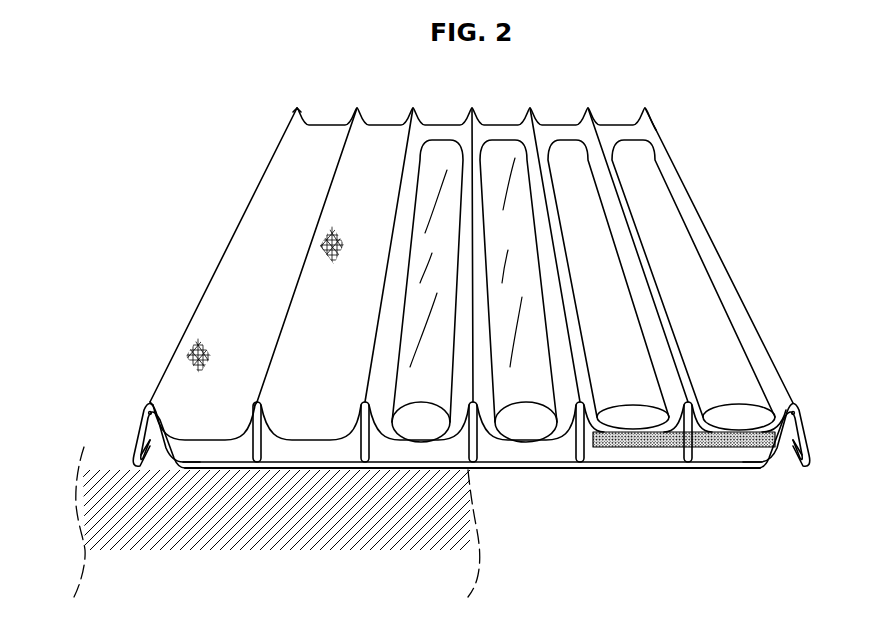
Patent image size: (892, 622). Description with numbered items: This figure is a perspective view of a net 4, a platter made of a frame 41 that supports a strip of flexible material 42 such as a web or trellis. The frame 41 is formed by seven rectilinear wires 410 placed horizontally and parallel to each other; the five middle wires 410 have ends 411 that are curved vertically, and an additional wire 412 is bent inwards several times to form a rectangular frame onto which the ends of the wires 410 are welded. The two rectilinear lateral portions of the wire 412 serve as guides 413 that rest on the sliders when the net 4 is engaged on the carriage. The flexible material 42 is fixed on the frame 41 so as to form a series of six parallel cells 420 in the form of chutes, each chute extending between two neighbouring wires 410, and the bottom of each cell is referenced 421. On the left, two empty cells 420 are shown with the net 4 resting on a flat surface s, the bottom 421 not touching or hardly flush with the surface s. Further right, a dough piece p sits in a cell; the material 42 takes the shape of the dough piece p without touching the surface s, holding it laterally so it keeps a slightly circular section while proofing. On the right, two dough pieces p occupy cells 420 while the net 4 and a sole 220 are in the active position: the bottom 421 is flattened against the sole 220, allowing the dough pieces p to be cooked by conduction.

The net 4 is at (215, 197).
The strip of flexible material 42 is at (272, 197).
The frame 41 is at (273, 395).
The cells 420 is at (308, 164).
The bottom of the cells 421 is at (205, 438).
The rectilinear wires 410 is at (148, 410).
The ends 411 is at (580, 444).
The additional wire 412 is at (632, 467).
The guides 413 is at (153, 440).
The sole 220 is at (742, 440).
The dough piece p is at (442, 150).
The flat surface s is at (103, 512).